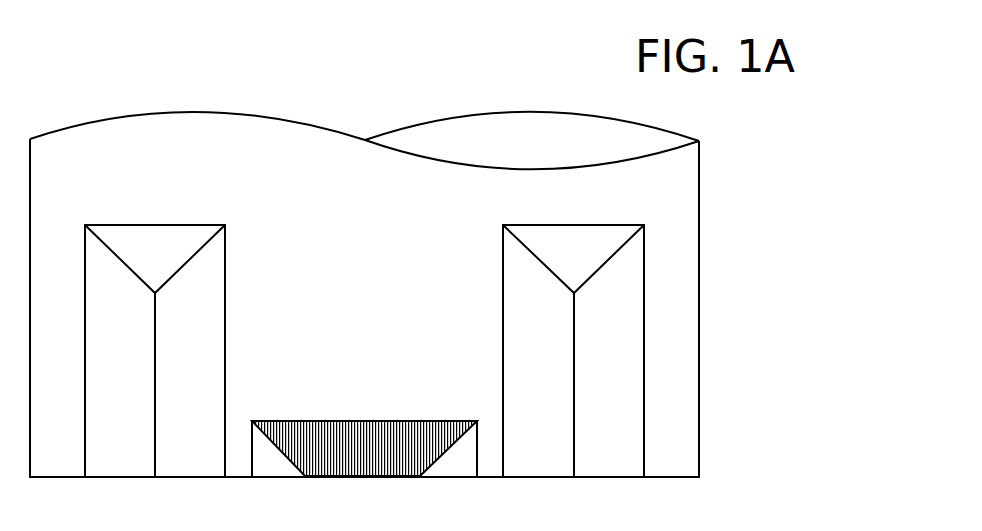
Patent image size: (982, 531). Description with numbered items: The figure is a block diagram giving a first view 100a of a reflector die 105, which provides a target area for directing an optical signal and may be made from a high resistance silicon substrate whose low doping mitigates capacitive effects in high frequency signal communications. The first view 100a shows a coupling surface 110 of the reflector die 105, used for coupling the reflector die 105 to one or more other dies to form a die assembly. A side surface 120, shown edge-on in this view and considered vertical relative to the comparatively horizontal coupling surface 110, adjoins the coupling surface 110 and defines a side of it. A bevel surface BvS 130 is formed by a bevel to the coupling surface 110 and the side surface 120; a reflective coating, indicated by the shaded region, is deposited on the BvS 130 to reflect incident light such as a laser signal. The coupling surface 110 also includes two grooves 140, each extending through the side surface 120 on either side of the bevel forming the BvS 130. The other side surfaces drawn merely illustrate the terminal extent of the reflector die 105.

The first view 100a is at (766, 161).
The reflector die 105 is at (225, 164).
The coupling surface 110 is at (676, 220).
The side surface 120 is at (671, 484).
The bevel surface BvS 130 is at (385, 471).
The grooves 140 is at (206, 357).